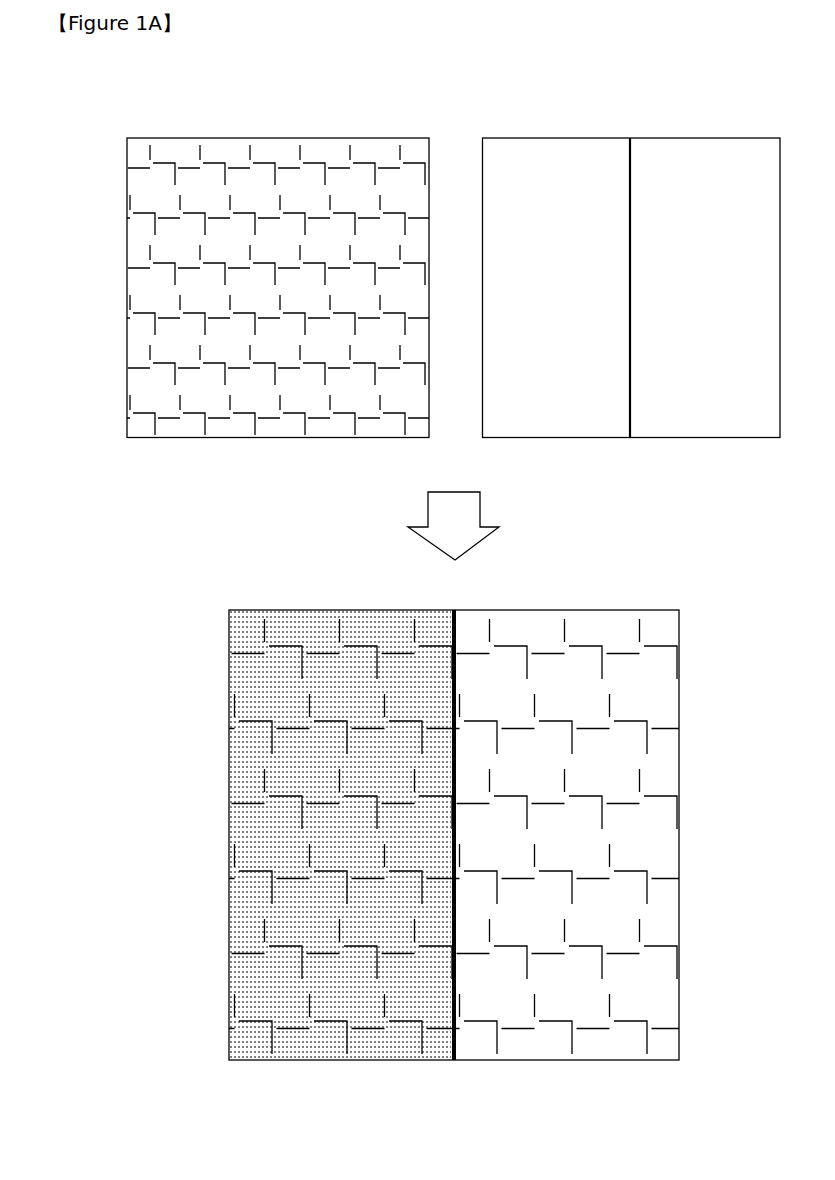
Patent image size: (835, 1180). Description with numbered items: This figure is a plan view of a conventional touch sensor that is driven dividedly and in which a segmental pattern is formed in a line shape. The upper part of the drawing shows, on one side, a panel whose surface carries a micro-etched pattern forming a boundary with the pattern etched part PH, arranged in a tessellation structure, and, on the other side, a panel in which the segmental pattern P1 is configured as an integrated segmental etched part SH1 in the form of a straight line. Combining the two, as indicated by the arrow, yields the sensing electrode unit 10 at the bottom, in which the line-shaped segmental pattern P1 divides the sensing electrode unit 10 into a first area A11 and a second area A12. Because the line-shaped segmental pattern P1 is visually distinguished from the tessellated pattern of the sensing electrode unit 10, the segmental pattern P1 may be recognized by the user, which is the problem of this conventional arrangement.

The pattern etched part PH is at (302, 158).
The segmental pattern P1 is at (635, 130).
The integrated segmental etched part SH1 is at (632, 197).
The sensing electrode unit 10 is at (229, 670).
The first area A11 is at (452, 1066).
The second area A12 is at (679, 1066).